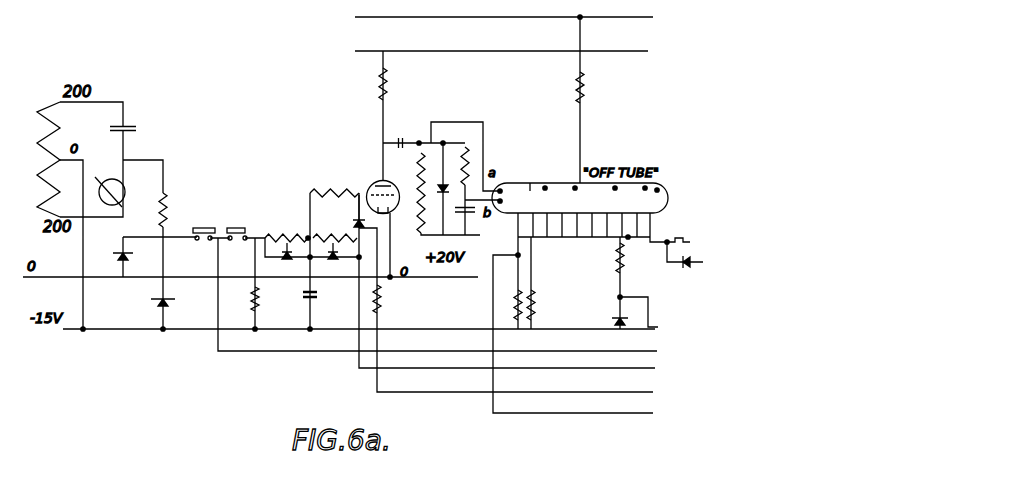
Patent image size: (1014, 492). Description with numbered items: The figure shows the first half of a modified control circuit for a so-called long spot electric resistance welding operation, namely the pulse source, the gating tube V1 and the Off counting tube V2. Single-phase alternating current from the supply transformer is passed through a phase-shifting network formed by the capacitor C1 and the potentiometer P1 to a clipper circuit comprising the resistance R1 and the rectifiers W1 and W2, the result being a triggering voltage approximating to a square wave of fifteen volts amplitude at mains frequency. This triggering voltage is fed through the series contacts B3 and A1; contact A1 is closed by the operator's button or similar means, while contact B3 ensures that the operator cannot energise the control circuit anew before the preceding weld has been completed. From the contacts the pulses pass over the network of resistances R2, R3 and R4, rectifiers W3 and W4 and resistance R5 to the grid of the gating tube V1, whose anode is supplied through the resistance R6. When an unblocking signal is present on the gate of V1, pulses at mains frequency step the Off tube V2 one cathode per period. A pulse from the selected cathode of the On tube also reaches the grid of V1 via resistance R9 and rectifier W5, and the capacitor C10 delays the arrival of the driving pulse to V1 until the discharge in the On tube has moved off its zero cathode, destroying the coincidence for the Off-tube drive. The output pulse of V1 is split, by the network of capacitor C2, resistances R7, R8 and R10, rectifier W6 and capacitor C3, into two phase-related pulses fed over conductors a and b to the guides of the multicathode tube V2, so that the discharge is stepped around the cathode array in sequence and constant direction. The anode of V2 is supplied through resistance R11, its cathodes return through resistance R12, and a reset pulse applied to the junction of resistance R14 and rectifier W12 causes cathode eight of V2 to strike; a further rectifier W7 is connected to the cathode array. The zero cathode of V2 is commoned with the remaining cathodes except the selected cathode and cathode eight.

The phase-shifting capacitor C1 is at (133, 128).
The phase-shifting potentiometer P1 is at (119, 192).
The clipper resistance R1 is at (176, 210).
The contact B3 is at (205, 224).
The contact A1 is at (238, 224).
The rectifier W1 is at (113, 248).
The rectifier W2 is at (154, 310).
The resistance R2 is at (267, 300).
The resistance R3 is at (286, 228).
The resistance R4 is at (335, 231).
The rectifier W3 is at (280, 259).
The rectifier W4 is at (328, 259).
The delay capacitor C10 is at (325, 299).
The grid resistance R5 is at (334, 184).
The rectifier W5 is at (359, 215).
The gating tube V1 is at (379, 191).
The anode resistance R6 is at (395, 84).
The coupling capacitor C2 is at (400, 134).
The resistance R7 is at (407, 172).
The resistance R8 is at (411, 213).
The resistance R9 is at (391, 299).
The rectifier W6 is at (437, 225).
The resistance R10 is at (458, 156).
The capacitor C3 is at (467, 217).
The anode resistance R11 is at (599, 87).
The Off tube V2 is at (580, 200).
The cathode resistance R12 is at (517, 310).
The reset resistance R14 is at (636, 258).
The reset rectifier W12 is at (620, 318).
The rectifier W7 is at (686, 270).